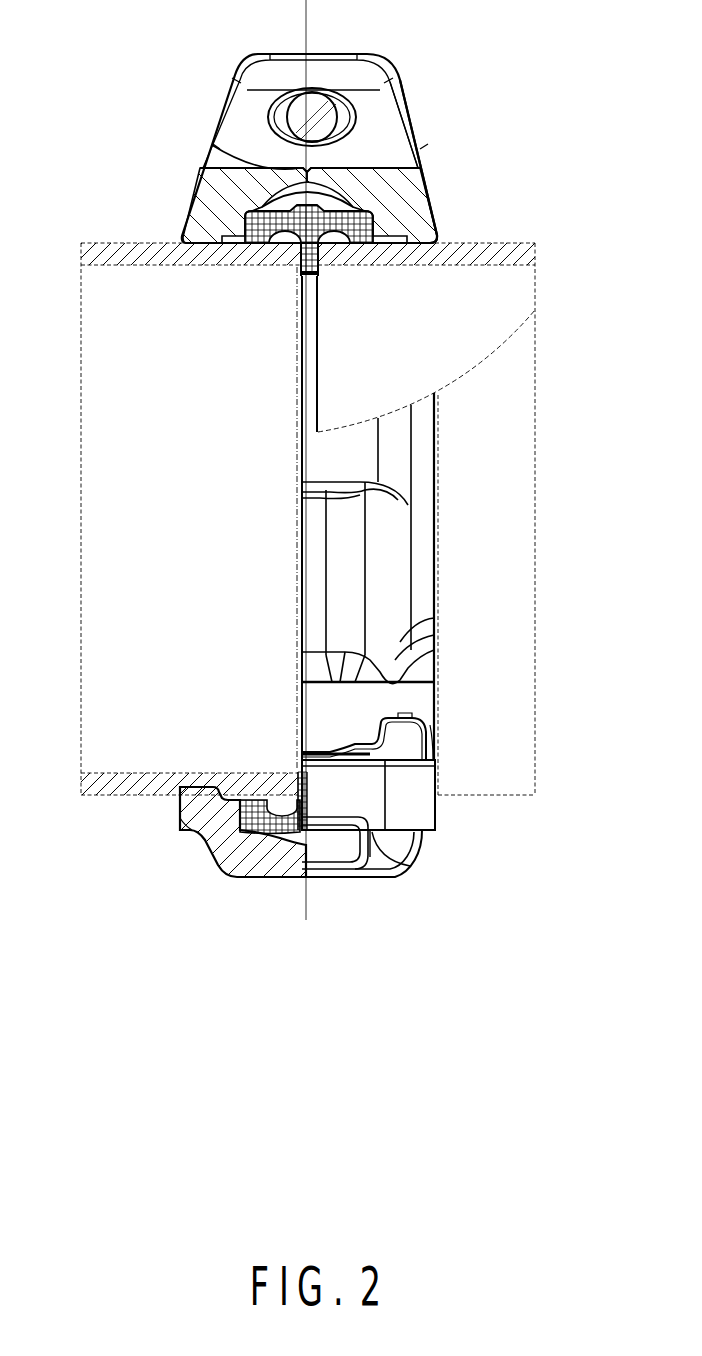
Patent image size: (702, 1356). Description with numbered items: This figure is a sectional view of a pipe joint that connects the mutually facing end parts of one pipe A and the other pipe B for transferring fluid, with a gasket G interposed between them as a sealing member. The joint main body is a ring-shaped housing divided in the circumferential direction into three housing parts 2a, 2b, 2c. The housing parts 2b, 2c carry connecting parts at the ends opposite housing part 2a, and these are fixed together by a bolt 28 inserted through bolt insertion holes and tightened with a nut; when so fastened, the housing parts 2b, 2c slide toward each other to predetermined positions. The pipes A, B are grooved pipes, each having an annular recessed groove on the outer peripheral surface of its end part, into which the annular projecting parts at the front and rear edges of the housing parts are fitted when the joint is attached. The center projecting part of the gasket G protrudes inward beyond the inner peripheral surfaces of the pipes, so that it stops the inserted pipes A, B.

The bolt 28 is at (320, 112).
The housing part 2b is at (190, 200).
The housing part 2c is at (433, 192).
The housing part 2a is at (218, 852).
The pipe A is at (98, 243).
The pipe B is at (505, 243).
The gasket G is at (297, 268).